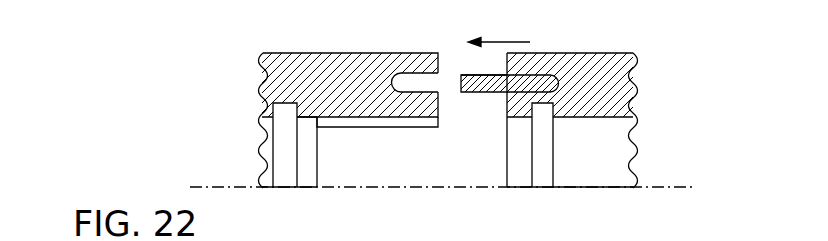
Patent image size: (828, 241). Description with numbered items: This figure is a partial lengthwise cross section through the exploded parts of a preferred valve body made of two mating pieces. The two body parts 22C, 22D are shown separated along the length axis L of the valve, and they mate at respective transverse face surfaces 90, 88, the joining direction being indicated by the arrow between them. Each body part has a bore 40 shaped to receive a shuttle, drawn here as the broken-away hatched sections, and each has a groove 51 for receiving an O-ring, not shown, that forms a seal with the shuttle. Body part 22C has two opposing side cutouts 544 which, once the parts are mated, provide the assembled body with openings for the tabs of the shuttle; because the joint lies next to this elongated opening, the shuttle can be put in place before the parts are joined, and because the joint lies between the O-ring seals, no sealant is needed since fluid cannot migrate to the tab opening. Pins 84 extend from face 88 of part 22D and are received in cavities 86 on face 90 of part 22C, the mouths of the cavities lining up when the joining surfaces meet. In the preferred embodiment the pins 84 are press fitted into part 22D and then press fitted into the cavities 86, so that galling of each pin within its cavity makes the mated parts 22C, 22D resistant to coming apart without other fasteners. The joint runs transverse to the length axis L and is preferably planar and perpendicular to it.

The body part 22C is at (291, 52).
The body part 22D is at (595, 53).
The cavity 86 is at (413, 72).
The transverse face surface 88 is at (506, 74).
The pin 84 is at (492, 93).
The transverse face surface 90 is at (440, 66).
The side cutout 544 is at (365, 128).
The bore 40 is at (261, 130).
The groove 51 is at (294, 182).
The reference line L is at (690, 186).